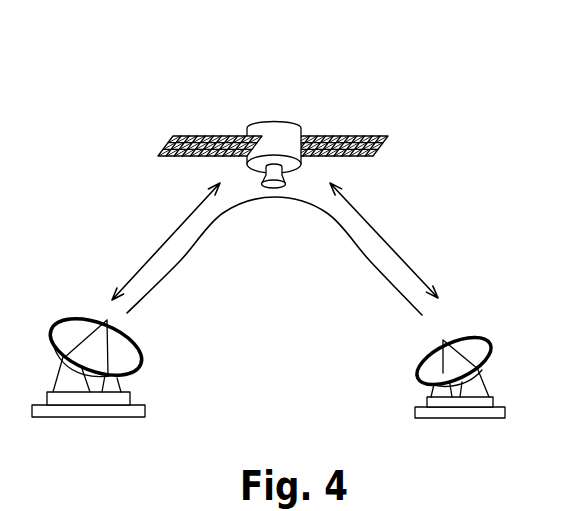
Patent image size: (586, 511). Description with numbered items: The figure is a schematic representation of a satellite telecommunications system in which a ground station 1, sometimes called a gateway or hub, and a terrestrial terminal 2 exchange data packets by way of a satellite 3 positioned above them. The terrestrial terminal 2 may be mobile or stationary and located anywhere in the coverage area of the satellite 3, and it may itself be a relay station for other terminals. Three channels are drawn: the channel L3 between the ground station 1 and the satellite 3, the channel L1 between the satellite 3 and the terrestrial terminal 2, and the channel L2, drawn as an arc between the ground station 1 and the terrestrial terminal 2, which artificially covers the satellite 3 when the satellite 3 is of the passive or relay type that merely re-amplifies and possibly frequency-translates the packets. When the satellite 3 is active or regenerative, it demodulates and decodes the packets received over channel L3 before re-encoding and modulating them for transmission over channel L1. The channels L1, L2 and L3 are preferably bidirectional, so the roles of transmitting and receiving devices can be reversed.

The ground station 1 is at (118, 412).
The terrestrial terminal 2 is at (483, 412).
The satellite 3 is at (284, 130).
The channel between the satellite and the terrestrial terminal L1 is at (368, 223).
The channel between the ground station and the terrestrial terminal L2 is at (180, 263).
The channel between the ground station and the satellite L3 is at (168, 238).